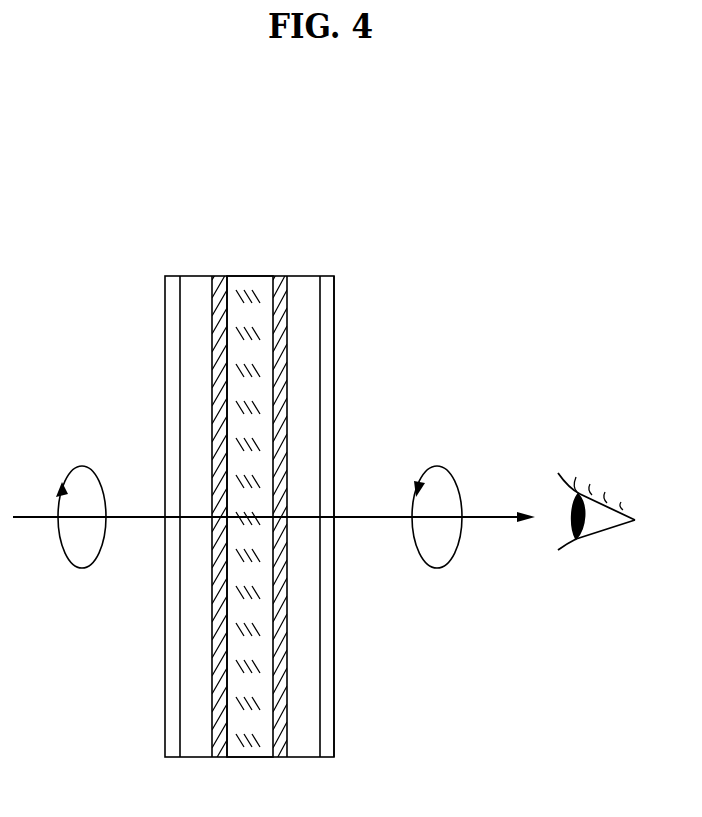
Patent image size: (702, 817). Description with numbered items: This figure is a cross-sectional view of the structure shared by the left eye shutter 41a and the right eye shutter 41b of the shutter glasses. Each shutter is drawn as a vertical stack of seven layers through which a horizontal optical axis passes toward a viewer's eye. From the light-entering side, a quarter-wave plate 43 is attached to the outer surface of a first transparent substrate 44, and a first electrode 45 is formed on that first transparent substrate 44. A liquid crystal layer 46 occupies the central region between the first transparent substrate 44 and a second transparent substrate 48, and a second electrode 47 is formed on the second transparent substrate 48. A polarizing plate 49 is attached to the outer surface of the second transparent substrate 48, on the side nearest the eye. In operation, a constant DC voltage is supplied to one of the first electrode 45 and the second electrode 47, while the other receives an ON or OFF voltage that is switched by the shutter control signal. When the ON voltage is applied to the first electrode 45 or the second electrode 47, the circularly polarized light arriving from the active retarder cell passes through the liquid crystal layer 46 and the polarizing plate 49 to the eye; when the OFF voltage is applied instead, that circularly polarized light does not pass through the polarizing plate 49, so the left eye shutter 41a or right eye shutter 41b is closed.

The left eye shutter 41a is at (158, 136).
The right eye shutter 41b is at (249, 516).
The λ/4 plate 43 is at (175, 284).
The first transparent substrate 44 is at (198, 284).
The first electrode 45 is at (216, 281).
The liquid crystal layer 46 is at (248, 280).
The second electrode 47 is at (277, 282).
The second transparent substrate 48 is at (303, 284).
The polarizing plate 49 is at (325, 284).